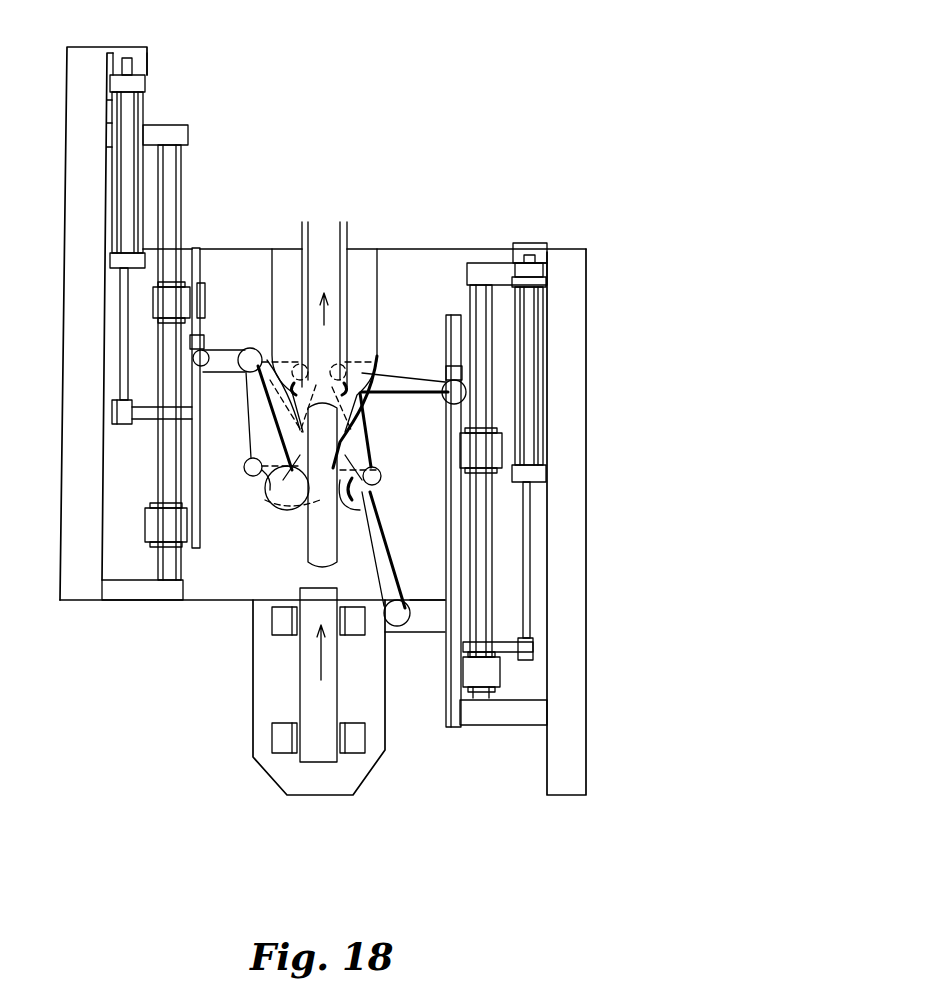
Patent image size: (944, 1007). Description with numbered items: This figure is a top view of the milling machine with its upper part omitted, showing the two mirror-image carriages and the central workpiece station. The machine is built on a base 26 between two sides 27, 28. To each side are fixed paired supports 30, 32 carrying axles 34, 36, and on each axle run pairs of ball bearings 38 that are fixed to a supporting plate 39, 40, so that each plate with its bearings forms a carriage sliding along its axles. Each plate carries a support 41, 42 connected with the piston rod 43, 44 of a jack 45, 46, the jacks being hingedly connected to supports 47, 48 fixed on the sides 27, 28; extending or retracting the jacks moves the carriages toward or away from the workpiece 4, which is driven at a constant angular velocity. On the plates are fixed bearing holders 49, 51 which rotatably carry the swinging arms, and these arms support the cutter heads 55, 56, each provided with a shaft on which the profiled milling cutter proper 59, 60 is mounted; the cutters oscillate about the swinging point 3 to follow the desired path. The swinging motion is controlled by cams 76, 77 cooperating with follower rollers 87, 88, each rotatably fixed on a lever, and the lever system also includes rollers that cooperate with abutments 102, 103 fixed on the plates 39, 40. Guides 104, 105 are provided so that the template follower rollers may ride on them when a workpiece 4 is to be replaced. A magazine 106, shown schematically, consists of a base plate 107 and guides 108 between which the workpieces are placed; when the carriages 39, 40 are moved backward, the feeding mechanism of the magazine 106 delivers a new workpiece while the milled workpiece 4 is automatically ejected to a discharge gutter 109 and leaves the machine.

The swinging point 3 is at (255, 354).
The workpiece 4 is at (310, 556).
The base 26 is at (218, 596).
The side 27 is at (62, 566).
The side 28 is at (580, 757).
The support 30 is at (167, 132).
The support 32 is at (467, 273).
The axle 34 is at (182, 169).
The axle 36 is at (488, 540).
The ball bearings 38 is at (157, 319).
The supporting plate 39 is at (200, 270).
The supporting plate 40 is at (446, 720).
The support 41 is at (143, 434).
The support 42 is at (501, 645).
The piston rod 43 is at (122, 333).
The piston rod 44 is at (530, 585).
The jack 45 is at (118, 199).
The jack 46 is at (535, 356).
The support 47 is at (126, 56).
The support 48 is at (531, 254).
The bearing holder 49 is at (221, 373).
The bearing holder 51 is at (432, 620).
The cutter head 55 is at (256, 428).
The cutter head 56 is at (386, 557).
The milling cutter 59 is at (281, 506).
The milling cutter 60 is at (371, 511).
The cam 76 is at (373, 490).
The cam 77 is at (266, 489).
The follower roller 87 is at (245, 470).
The follower roller 88 is at (374, 478).
The abutment 102 is at (198, 345).
The abutment 103 is at (447, 380).
The guide 104 is at (282, 254).
The guide 105 is at (362, 255).
The magazine 106 is at (272, 692).
The base plate 107 is at (282, 777).
The guides 108 is at (280, 637).
The discharge gutter 109 is at (310, 228).